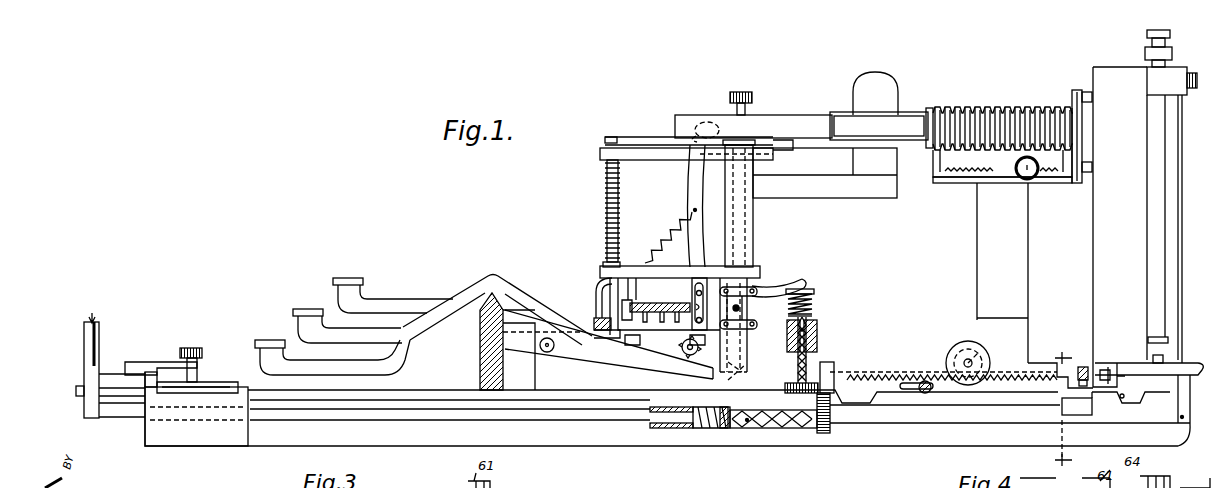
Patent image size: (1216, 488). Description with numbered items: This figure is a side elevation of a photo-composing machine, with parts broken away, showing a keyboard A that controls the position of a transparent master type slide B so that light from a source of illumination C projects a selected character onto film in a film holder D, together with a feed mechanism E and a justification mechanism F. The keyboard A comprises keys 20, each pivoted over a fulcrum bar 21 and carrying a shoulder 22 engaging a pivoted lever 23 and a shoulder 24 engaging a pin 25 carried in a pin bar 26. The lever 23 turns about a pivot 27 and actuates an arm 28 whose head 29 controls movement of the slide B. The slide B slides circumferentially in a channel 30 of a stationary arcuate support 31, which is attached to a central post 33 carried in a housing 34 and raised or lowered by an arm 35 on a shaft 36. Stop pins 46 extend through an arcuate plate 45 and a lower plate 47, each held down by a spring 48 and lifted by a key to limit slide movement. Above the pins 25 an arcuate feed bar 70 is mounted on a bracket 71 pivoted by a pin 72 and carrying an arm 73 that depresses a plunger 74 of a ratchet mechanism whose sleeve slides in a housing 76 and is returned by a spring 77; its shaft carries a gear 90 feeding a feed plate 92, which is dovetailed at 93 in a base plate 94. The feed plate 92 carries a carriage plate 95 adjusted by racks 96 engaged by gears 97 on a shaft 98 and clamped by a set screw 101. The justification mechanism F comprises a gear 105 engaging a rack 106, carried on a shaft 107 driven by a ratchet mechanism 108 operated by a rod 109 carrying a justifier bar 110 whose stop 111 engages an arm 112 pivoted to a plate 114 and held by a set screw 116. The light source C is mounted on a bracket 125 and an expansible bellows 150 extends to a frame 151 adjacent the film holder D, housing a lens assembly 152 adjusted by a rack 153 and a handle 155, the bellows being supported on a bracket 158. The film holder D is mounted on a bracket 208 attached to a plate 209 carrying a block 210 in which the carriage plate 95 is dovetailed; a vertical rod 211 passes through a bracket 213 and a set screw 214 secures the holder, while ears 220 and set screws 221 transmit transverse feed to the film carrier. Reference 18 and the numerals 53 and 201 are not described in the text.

The section line 18 is at (1063, 409).
The keys 20 is at (273, 340).
The fulcrum bar 21 is at (485, 318).
The shoulder 22 is at (597, 330).
The pivoted lever 23 is at (598, 300).
The shoulder 24 is at (677, 292).
The pin 25 is at (670, 278).
The pin bar 26 is at (632, 267).
The pivot 27 is at (696, 351).
The arm 28 is at (688, 194).
The head 29 is at (708, 122).
The channel 30 is at (833, 114).
The arcuate support 31 is at (792, 118).
The central post 33 is at (752, 105).
The housing 34 is at (753, 215).
The arm 35 is at (743, 367).
The shaft 36 is at (549, 352).
The arcuate plate 45 is at (656, 152).
The pins 46 is at (618, 207).
The lower plate 47 is at (600, 270).
The spring 48 is at (603, 180).
The ratchet wheel 53 is at (699, 345).
The feed bar 70 is at (688, 277).
The bracket 71 is at (740, 308).
The pin 72 is at (742, 303).
The arm 73 is at (806, 281).
The plunger 74 is at (814, 292).
The housing 76 is at (787, 336).
The spring 77 is at (813, 312).
The gear 90 is at (785, 386).
The feed plate 92 is at (835, 370).
The dovetail 93 is at (862, 393).
The base plate 94 is at (867, 413).
The carriage plate 95 is at (1148, 397).
The racks 96 is at (1005, 370).
The gears 97 is at (960, 341).
The shaft 98 is at (980, 342).
The set screw 101 is at (924, 393).
The gear 105 is at (821, 428).
The rack 106 is at (822, 395).
The shaft 107 is at (800, 428).
The ratchet mechanism 108 is at (755, 430).
The rod 109 is at (130, 412).
The justifier bar 110 is at (83, 343).
The stop 111 is at (143, 375).
The arm 112 is at (152, 362).
The plate 114 is at (217, 382).
The set screw 116 is at (190, 348).
The bracket 125 is at (867, 192).
The bellows 150 is at (975, 112).
The frame 151 is at (1082, 90).
The lens assembly 152 is at (1018, 118).
The rack 153 is at (997, 172).
The handle 155 is at (1020, 178).
The bracket 158 is at (992, 210).
The knob 201 is at (1172, 38).
The bracket 208 is at (1142, 370).
The plate 209 is at (1157, 418).
The block 210 is at (1120, 412).
The vertical rod 211 is at (1177, 228).
The bracket 213 is at (1165, 80).
The set screw 214 is at (1185, 80).
The ears 220 is at (1118, 380).
The set screws 221 is at (1082, 367).
The keyboard A is at (403, 307).
The master type slide B is at (915, 113).
The source of illumination C is at (868, 77).
The film holder D is at (1115, 72).
The feed mechanism E is at (904, 363).
The justification mechanism F is at (567, 432).